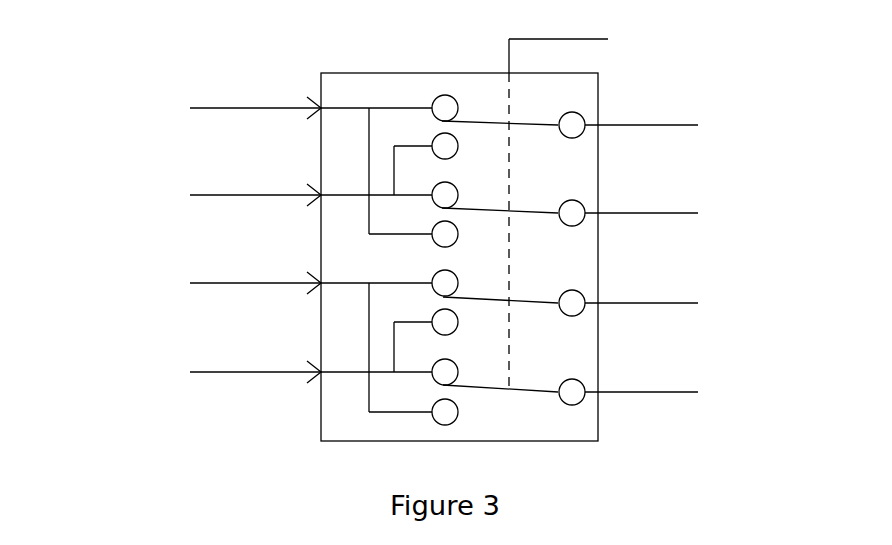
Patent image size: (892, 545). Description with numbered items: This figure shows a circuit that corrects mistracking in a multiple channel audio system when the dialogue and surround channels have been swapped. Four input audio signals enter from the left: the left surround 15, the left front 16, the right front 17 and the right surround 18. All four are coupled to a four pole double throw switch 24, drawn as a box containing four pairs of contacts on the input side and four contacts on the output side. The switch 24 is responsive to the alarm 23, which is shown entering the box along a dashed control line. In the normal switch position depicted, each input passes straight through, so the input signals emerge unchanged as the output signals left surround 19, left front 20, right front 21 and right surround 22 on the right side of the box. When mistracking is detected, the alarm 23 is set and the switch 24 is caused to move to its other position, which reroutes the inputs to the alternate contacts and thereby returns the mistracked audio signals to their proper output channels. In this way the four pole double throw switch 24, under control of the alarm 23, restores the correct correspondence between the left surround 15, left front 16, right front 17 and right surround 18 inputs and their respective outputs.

The left surround signal 15 is at (222, 100).
The left front signal 16 is at (222, 186).
The right front signal 17 is at (220, 277).
The right surround signal 18 is at (222, 365).
The left surround output signal 19 is at (658, 118).
The left front output signal 20 is at (658, 205).
The right front output signal 21 is at (658, 294).
The right surround output signal 22 is at (655, 384).
The alarm 23 is at (600, 41).
The four pole double throw switch 24 is at (539, 420).